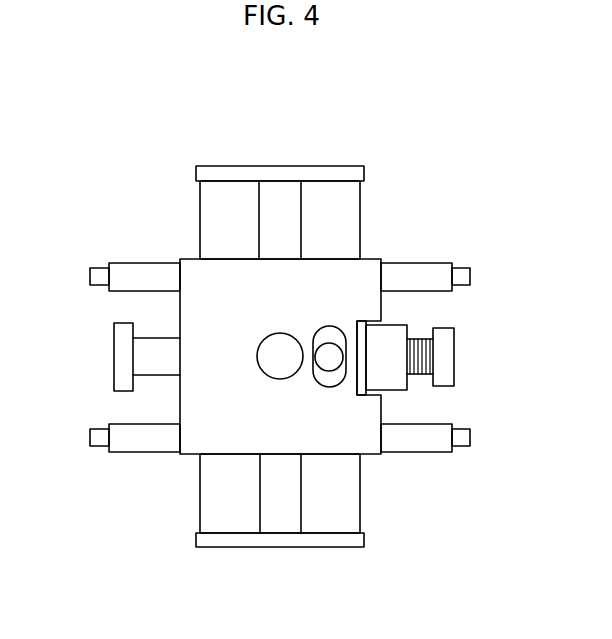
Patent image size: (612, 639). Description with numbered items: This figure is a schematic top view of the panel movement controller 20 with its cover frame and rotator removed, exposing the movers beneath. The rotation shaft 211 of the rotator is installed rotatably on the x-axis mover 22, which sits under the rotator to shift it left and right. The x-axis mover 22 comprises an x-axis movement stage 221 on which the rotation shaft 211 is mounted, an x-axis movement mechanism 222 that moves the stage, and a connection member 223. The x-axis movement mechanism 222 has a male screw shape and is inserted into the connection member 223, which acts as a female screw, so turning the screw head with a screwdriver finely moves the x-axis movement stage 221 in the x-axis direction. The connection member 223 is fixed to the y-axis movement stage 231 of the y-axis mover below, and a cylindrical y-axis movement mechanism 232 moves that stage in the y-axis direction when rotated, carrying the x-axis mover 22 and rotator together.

The panel movement controller 20 is at (293, 90).
The y-axis movement stage 231 is at (281, 166).
The y-axis movement mechanism 232 is at (122, 357).
The rotation shaft 211 is at (275, 368).
The x-axis mover 22 is at (530, 303).
The x-axis movement stage 221 is at (368, 299).
The x-axis movement mechanism 222 is at (450, 356).
The connection member 223 is at (399, 387).